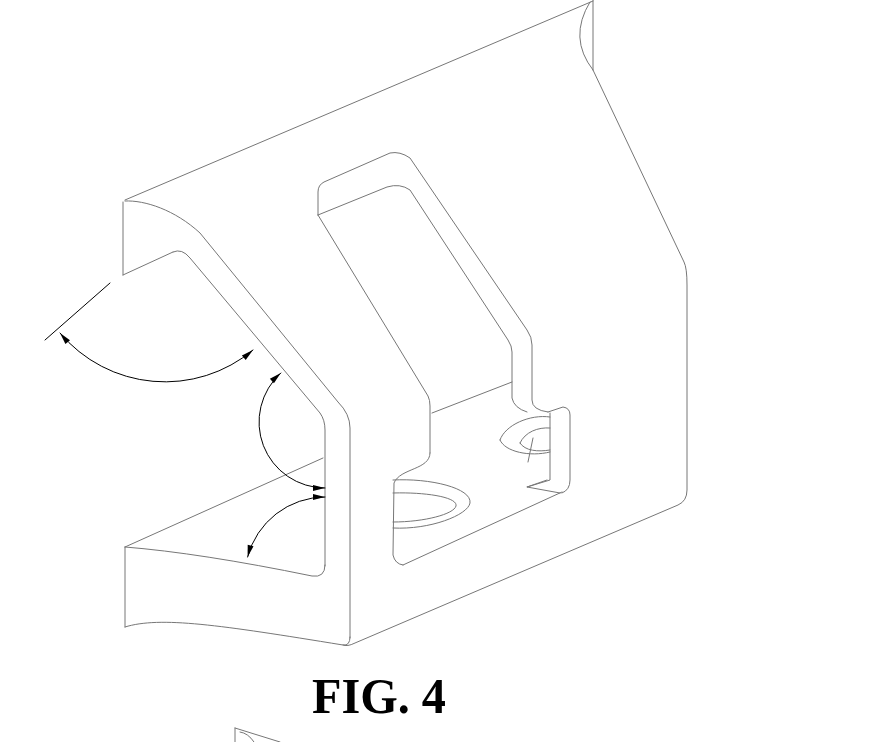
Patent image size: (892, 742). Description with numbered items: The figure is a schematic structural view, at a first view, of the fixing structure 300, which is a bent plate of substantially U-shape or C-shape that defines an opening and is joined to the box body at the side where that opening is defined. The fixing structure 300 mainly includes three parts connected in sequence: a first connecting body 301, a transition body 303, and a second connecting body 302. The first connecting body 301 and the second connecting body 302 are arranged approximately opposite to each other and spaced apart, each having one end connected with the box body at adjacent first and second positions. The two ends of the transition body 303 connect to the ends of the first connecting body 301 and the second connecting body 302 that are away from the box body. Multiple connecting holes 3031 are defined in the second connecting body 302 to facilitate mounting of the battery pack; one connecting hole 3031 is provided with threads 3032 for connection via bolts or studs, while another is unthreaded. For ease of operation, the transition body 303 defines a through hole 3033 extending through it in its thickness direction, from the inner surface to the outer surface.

The fixing structure 300 is at (126, 117).
The first connecting body 301 is at (123, 243).
The second connecting body 302 is at (138, 578).
The transition body 303 is at (635, 223).
The connecting hole 3031 is at (412, 508).
The thread 3032 is at (548, 477).
The through hole 3033 is at (406, 314).